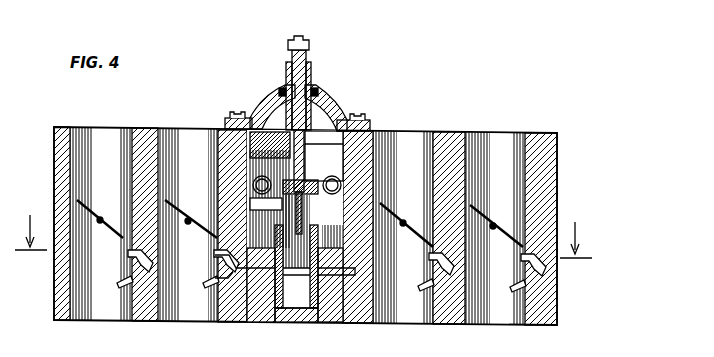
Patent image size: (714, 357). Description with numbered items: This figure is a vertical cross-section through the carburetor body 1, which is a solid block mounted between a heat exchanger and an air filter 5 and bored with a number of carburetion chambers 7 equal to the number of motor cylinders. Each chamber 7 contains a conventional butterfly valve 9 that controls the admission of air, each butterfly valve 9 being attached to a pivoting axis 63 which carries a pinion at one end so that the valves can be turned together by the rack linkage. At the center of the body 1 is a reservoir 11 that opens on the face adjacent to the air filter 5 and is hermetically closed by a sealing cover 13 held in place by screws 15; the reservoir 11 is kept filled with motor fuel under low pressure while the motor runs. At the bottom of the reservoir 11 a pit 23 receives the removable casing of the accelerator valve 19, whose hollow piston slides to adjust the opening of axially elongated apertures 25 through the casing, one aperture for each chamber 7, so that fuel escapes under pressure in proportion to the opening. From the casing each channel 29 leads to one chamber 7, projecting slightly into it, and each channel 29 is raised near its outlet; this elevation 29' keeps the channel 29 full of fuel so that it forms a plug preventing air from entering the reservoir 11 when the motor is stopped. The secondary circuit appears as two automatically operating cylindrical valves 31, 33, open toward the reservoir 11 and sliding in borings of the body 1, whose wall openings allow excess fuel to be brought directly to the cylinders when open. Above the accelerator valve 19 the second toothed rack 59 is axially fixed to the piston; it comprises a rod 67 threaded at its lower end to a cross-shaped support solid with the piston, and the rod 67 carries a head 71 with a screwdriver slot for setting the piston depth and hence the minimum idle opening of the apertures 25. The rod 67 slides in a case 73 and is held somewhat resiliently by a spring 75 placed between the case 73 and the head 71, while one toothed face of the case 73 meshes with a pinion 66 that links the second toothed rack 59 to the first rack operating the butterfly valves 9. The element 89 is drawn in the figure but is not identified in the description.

The body 1 is at (557, 185).
The air filter 5 is at (303, 252).
The carburetion chamber 7 is at (193, 150).
The butterfly valve 9 is at (400, 222).
The reservoir 11 is at (395, 132).
The sealing cover 13 is at (337, 120).
The screws 15 is at (232, 112).
The accelerator valve 19 is at (327, 255).
The pit 23 is at (338, 290).
The apertures 25 is at (287, 312).
The channel 29 is at (245, 305).
The elevation 29' is at (211, 314).
The automatically operating valve 31 is at (226, 125).
The automatically operating valve 33 is at (352, 118).
The second toothed rack 59 is at (303, 84).
The pivoting axis 63 is at (100, 224).
The pinion 66 is at (270, 125).
The rod 67 is at (312, 100).
The head 71 is at (308, 40).
The case 73 is at (287, 70).
The spring 75 is at (293, 52).
The latch 89 is at (127, 280).